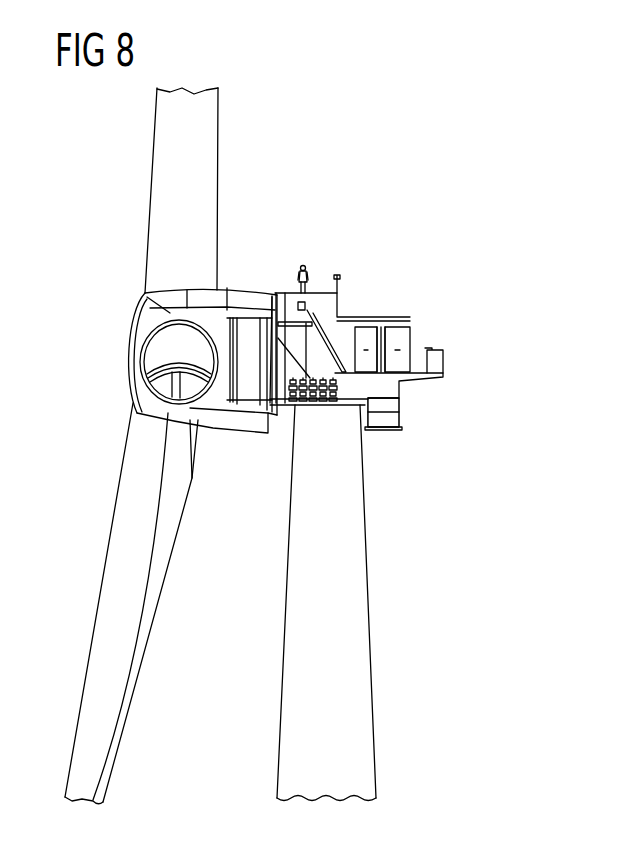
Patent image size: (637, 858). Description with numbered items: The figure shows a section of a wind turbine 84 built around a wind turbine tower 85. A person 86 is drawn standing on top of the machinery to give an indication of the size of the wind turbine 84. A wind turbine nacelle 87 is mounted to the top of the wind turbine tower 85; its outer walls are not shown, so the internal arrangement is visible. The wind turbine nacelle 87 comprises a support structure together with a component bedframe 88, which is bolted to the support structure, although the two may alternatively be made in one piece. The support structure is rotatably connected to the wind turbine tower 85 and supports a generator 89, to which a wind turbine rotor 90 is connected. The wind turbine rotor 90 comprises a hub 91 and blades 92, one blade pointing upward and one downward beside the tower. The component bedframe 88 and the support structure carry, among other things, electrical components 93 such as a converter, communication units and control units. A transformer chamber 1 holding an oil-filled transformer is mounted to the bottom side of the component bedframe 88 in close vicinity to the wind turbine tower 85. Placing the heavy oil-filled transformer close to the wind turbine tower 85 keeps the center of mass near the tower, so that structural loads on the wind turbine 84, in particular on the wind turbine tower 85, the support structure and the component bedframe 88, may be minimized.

The transformer chamber 1 is at (385, 420).
The wind turbine 84 is at (411, 207).
The wind turbine tower 85 is at (357, 678).
The person 86 is at (308, 268).
The wind turbine nacelle 87 is at (407, 422).
The component bedframe 88 is at (390, 383).
The generator 89 is at (247, 372).
The wind turbine rotor 90 is at (139, 229).
The hub 91 is at (125, 352).
The blades 92 is at (118, 585).
The electrical components 93 is at (402, 338).